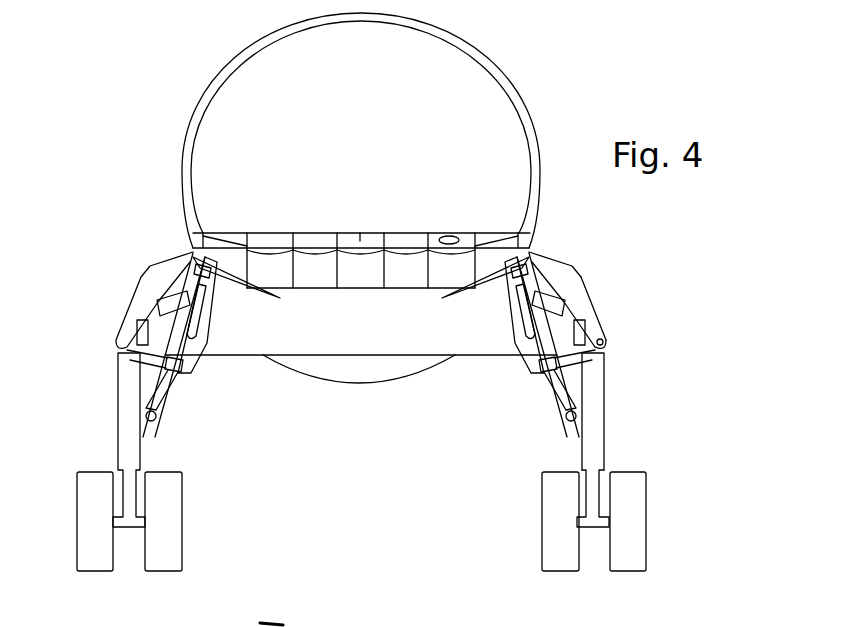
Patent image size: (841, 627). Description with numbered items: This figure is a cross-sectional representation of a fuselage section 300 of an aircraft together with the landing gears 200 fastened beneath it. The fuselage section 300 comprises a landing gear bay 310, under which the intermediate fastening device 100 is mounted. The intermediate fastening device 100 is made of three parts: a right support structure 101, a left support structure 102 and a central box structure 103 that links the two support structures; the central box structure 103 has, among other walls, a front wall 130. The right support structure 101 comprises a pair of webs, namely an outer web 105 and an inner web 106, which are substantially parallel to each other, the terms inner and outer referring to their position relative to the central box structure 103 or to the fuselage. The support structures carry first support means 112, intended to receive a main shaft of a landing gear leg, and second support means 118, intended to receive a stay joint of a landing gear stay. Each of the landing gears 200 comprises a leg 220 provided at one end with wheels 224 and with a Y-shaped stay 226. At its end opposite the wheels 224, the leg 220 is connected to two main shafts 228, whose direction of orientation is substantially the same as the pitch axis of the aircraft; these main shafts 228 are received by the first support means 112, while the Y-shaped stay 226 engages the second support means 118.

The fuselage section 300 is at (546, 90).
The second support means 118 is at (541, 228).
The outer web 105 is at (556, 262).
The intermediate fastening device 100 is at (614, 280).
The right support structure 101 is at (614, 302).
The first support means 112 is at (624, 355).
The main shafts 228 is at (606, 343).
The leg 220 is at (597, 383).
The landing gears 200 is at (643, 438).
The wheels 224 is at (670, 525).
The Y-shaped stay 226 is at (530, 363).
The inner web 106 is at (507, 356).
The front wall 130 is at (422, 343).
The landing gear bay 310 is at (343, 398).
The central box structure 103 is at (252, 372).
The left support structure 102 is at (102, 284).